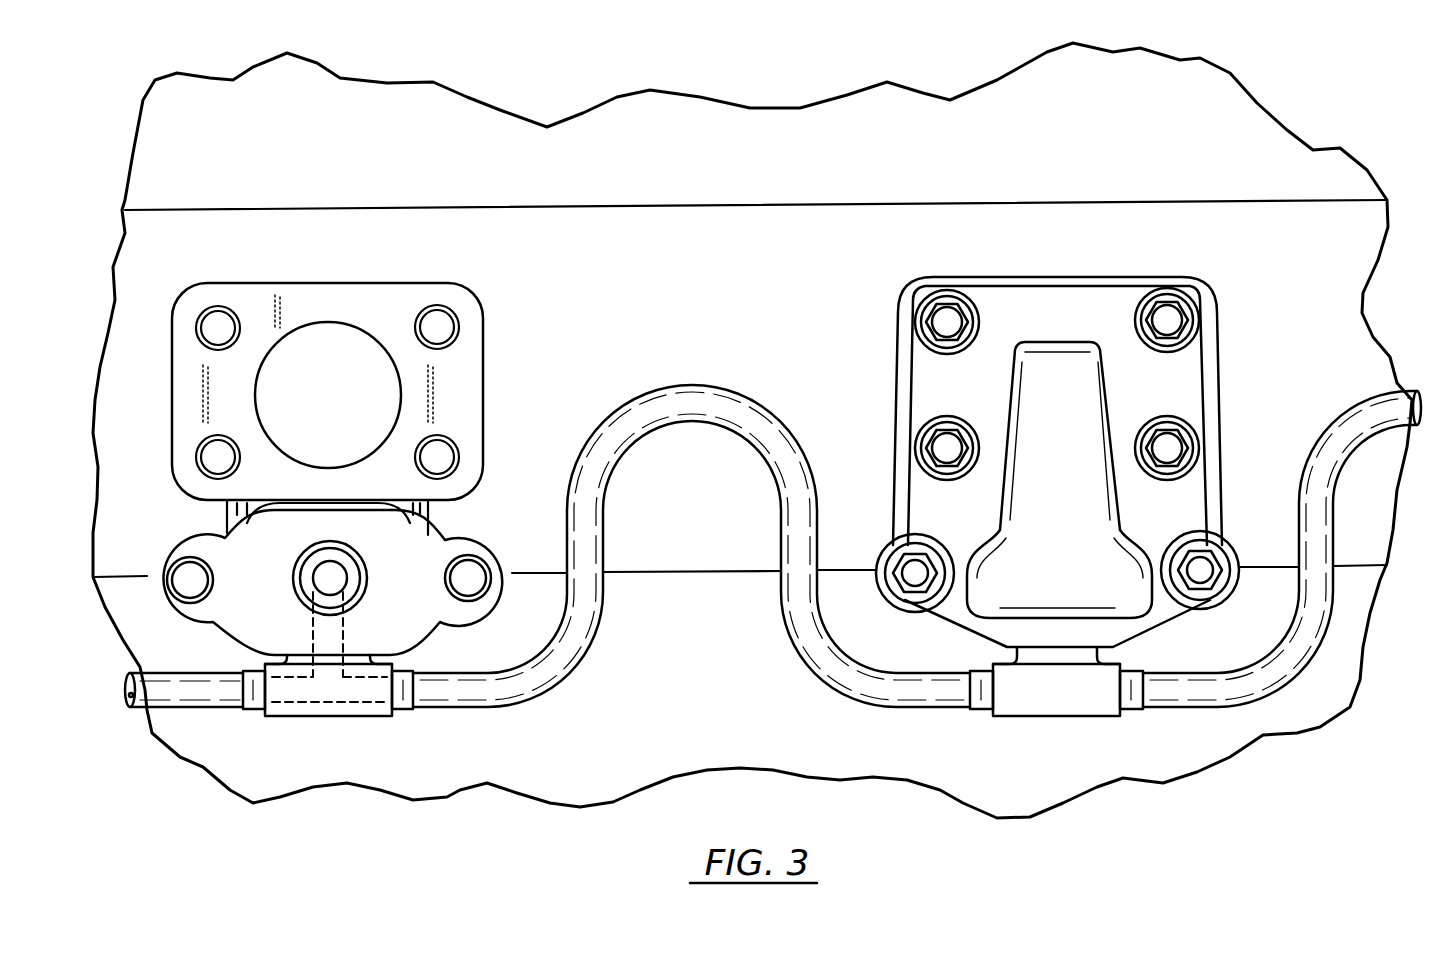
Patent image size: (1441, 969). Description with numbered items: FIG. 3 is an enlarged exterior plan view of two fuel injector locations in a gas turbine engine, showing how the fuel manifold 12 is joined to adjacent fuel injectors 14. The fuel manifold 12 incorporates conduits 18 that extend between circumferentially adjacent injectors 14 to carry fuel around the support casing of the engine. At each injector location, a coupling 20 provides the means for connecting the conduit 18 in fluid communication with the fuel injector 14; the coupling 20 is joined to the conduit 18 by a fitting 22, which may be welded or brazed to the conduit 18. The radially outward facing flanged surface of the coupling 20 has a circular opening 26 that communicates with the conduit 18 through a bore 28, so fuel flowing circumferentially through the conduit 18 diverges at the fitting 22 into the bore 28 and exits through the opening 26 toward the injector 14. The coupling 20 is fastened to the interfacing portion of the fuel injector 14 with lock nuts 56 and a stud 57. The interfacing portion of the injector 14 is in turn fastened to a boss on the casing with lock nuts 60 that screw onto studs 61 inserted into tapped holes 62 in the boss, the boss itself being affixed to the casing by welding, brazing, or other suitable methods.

The fuel manifold 12 is at (773, 624).
The fuel injector 14 is at (1072, 252).
The conduit 18 is at (583, 652).
The coupling 20 is at (233, 627).
The fitting 22 is at (308, 720).
The circular opening 26 is at (296, 571).
The bore 28 is at (347, 633).
The lock nut 56 is at (907, 550).
The stud 57 is at (915, 577).
The lock nut 60 is at (937, 300).
The stud 61 is at (963, 338).
The tapped hole 62 is at (200, 316).